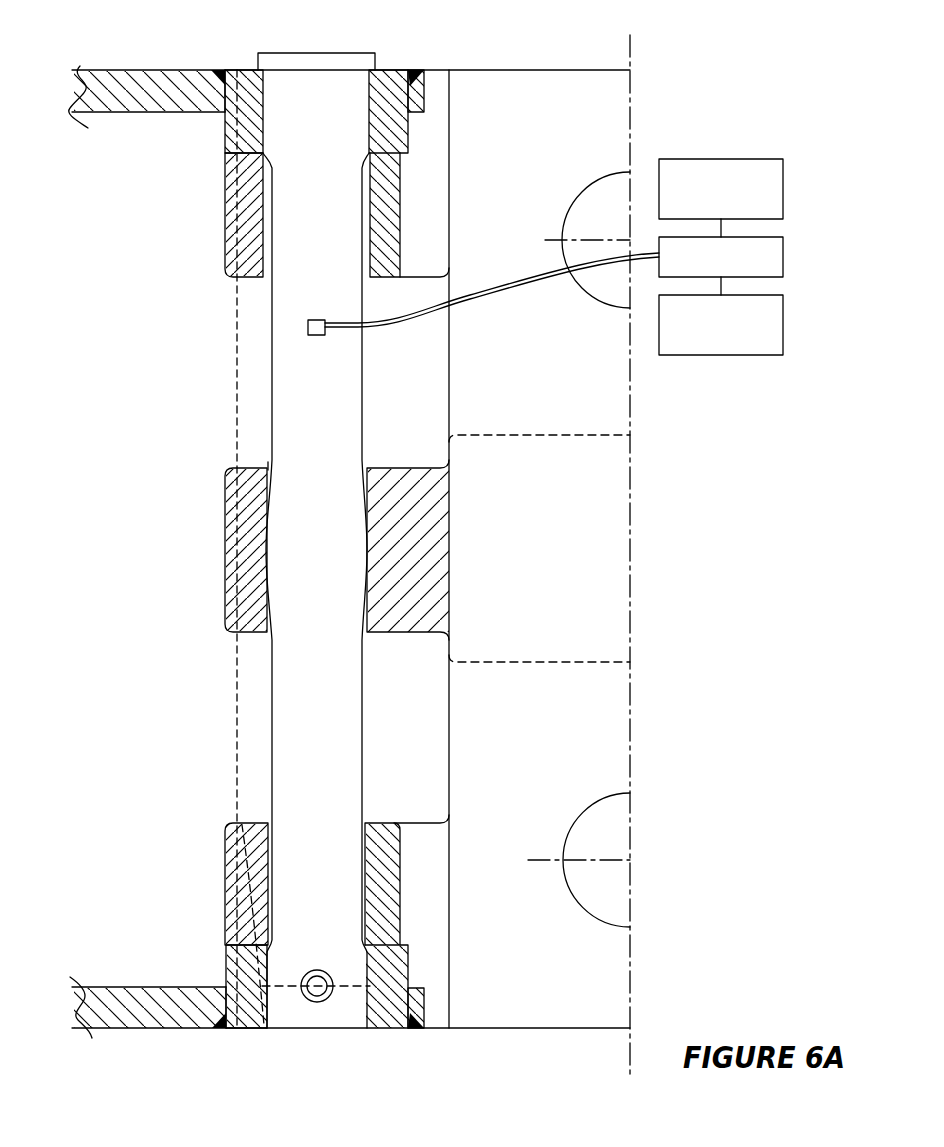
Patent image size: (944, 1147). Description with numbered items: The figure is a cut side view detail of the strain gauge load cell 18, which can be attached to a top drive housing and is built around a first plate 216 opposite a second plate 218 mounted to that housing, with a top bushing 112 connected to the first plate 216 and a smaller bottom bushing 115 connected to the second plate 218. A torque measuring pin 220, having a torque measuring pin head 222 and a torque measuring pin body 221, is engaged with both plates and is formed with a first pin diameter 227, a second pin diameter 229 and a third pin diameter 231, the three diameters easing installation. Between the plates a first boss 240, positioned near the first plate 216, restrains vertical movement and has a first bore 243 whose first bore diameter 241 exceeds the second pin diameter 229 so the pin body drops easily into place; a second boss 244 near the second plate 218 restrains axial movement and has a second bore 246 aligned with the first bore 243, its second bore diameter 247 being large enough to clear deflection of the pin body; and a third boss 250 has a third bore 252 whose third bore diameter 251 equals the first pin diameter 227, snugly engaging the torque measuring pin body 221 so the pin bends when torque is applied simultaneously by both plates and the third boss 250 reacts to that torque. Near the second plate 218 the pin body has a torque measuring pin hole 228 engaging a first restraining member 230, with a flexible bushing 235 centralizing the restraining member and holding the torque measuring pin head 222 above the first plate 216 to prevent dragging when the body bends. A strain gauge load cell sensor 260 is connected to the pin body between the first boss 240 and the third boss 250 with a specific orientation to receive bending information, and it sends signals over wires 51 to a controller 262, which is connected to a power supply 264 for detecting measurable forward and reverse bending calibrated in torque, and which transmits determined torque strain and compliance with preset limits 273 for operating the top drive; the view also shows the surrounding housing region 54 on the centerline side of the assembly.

The strain gauge load cell 18 is at (418, 122).
The wires 51 is at (494, 296).
The wellhead body 54 is at (594, 122).
The top bushing 112 is at (424, 94).
The bottom bushing 115 is at (424, 1008).
The first plate 216 is at (157, 70).
The second plate 218 is at (176, 1028).
The torque measuring pin 220 is at (366, 376).
The torque measuring pin body 221 is at (362, 734).
The torque measuring pin head 222 is at (348, 53).
The first pin diameter 227 is at (366, 548).
The torque measuring pin hole 228 is at (317, 996).
The second pin diameter 229 is at (368, 122).
The first restraining member 230 is at (312, 1000).
The third pin diameter 231 is at (364, 955).
The flexible bushing 235 is at (322, 1000).
The first boss 240 is at (225, 206).
The first bore diameter 241 is at (361, 217).
The first bore 243 is at (266, 280).
The second boss 244 is at (225, 884).
The second bore 246 is at (268, 822).
The second bore diameter 247 is at (364, 882).
The third boss 250 is at (225, 552).
The third bore diameter 251 is at (366, 472).
The third bore 252 is at (270, 466).
The strain gauge load cell sensor 260 is at (308, 330).
The controller 262 is at (783, 256).
The power supply 264 is at (783, 190).
The preset limits 273 is at (783, 326).